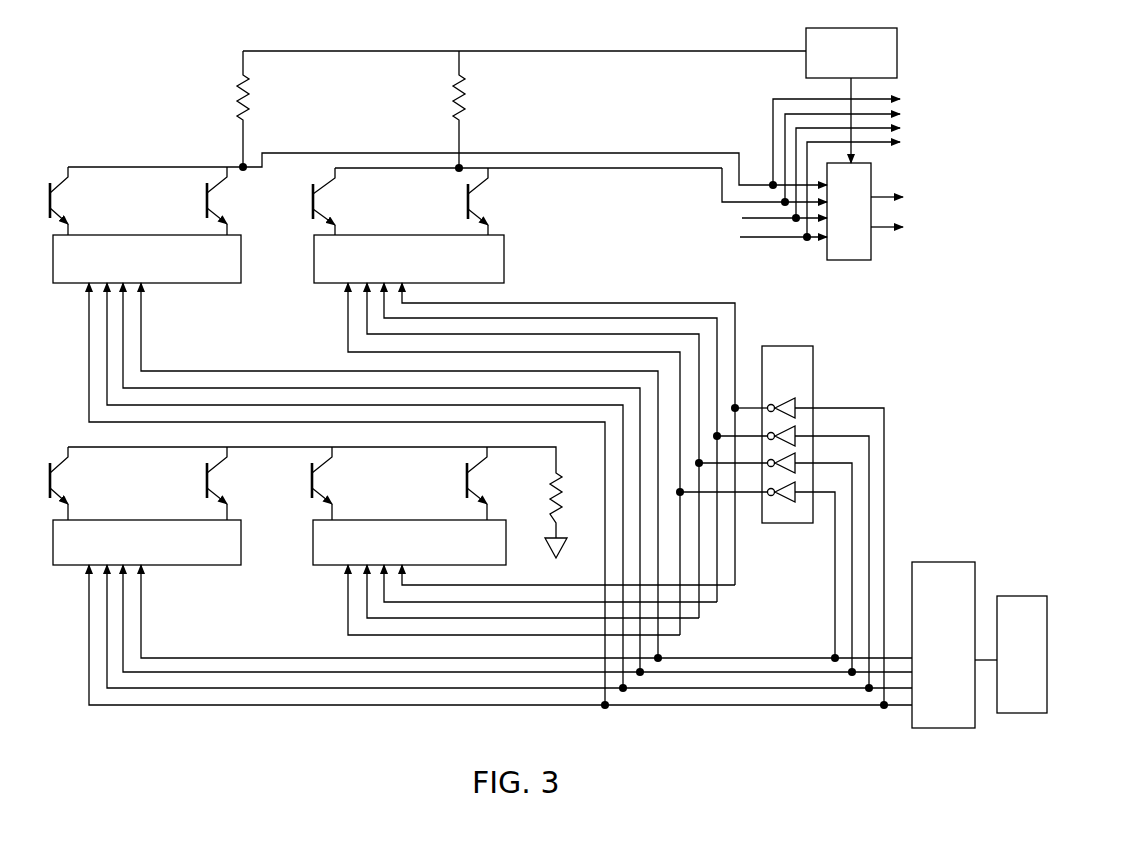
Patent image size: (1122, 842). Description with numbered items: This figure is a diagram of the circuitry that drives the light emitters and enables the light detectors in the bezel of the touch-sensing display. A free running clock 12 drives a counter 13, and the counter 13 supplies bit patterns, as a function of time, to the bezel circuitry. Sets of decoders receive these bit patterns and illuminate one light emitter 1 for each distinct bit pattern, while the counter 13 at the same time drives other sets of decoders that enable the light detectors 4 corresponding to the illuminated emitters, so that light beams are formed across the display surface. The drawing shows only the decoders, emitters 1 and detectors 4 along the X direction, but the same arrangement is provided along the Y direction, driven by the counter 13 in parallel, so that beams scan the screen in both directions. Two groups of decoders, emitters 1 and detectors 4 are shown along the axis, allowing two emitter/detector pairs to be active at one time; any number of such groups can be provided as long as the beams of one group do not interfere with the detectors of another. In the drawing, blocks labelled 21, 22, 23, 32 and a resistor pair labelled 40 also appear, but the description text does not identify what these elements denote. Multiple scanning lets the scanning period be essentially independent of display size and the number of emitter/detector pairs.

The light emitters 1 is at (85, 480).
The light detectors 4 is at (80, 200).
The free running clock 12 is at (1022, 654).
The counter 13 is at (954, 645).
The touch detect logic 21 is at (662, 174).
The timing control circuit 22 is at (851, 95).
The inverter bank 23 is at (782, 525).
The current switch driver 32 is at (482, 470).
The load resistors 40 is at (438, 98).